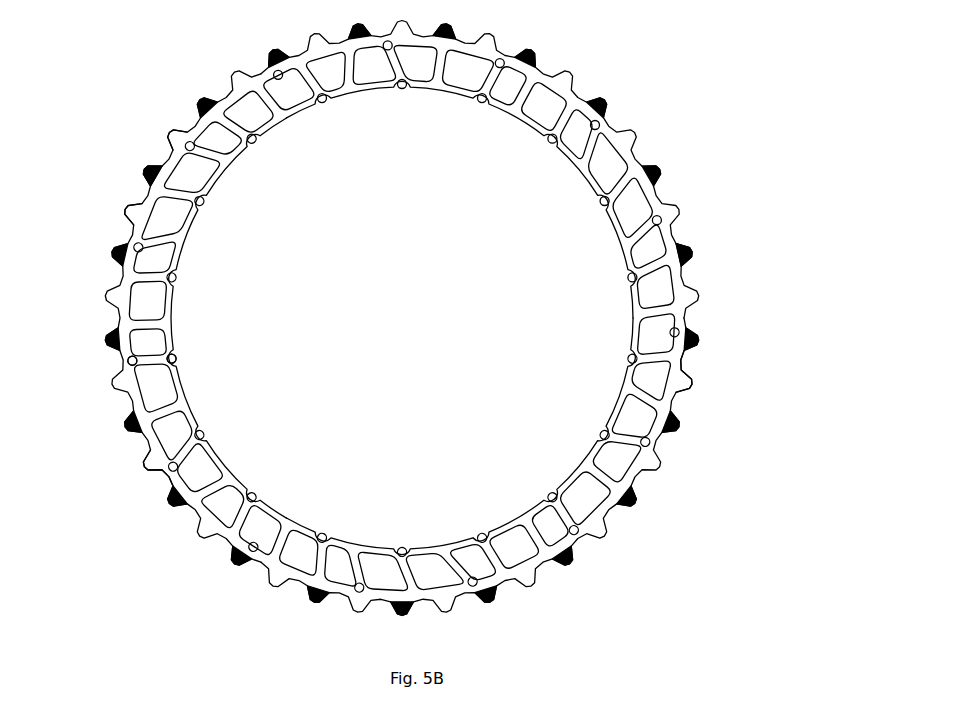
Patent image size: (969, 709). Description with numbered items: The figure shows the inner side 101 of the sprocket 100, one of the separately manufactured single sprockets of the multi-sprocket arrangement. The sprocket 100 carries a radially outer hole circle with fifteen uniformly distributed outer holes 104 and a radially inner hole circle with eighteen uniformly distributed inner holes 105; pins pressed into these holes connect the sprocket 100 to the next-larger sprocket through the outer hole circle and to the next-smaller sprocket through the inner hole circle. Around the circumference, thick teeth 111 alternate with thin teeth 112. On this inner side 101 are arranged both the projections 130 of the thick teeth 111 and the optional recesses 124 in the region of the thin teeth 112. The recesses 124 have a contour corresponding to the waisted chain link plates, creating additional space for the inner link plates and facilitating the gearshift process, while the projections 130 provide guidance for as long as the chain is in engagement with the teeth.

The sprocket 100 is at (714, 104).
The inner side 101 is at (685, 373).
The outer holes 104 is at (127, 358).
The inner holes 105 is at (177, 353).
The thick teeth 111 is at (143, 167).
The thin teeth 112 is at (173, 133).
The recesses 124 is at (157, 468).
The projections 130 is at (695, 250).